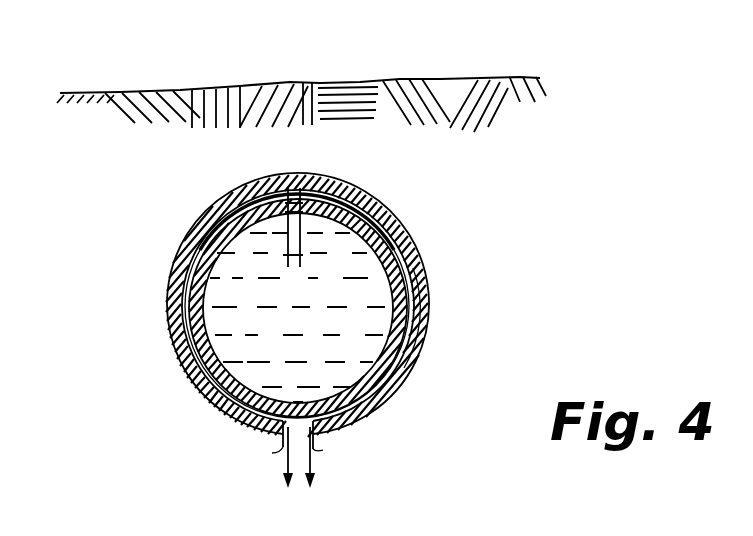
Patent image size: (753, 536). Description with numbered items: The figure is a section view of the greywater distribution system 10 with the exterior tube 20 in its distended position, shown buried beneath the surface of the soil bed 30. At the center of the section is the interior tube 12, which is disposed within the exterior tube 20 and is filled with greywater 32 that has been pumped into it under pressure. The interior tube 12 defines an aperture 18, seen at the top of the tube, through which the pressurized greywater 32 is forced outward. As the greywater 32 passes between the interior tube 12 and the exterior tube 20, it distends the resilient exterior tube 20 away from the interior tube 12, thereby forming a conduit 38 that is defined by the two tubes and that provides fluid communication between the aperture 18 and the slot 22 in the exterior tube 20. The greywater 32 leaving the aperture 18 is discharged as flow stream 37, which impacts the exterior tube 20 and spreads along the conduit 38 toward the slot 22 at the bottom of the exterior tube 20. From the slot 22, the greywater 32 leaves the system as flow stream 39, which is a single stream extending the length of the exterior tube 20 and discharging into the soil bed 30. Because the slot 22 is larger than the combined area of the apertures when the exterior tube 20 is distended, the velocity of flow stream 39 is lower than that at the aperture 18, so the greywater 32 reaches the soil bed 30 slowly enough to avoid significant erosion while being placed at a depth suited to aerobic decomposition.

The greywater distribution system 10 is at (127, 228).
The interior tube 12 is at (410, 277).
The aperture 18 is at (301, 192).
The exterior tube 20 is at (167, 288).
The slot 22 is at (323, 450).
The soil bed 30 is at (293, 120).
The greywater 32 is at (363, 327).
The flow stream 37 is at (240, 200).
The conduit 38 is at (425, 310).
The flow stream 39 is at (272, 453).